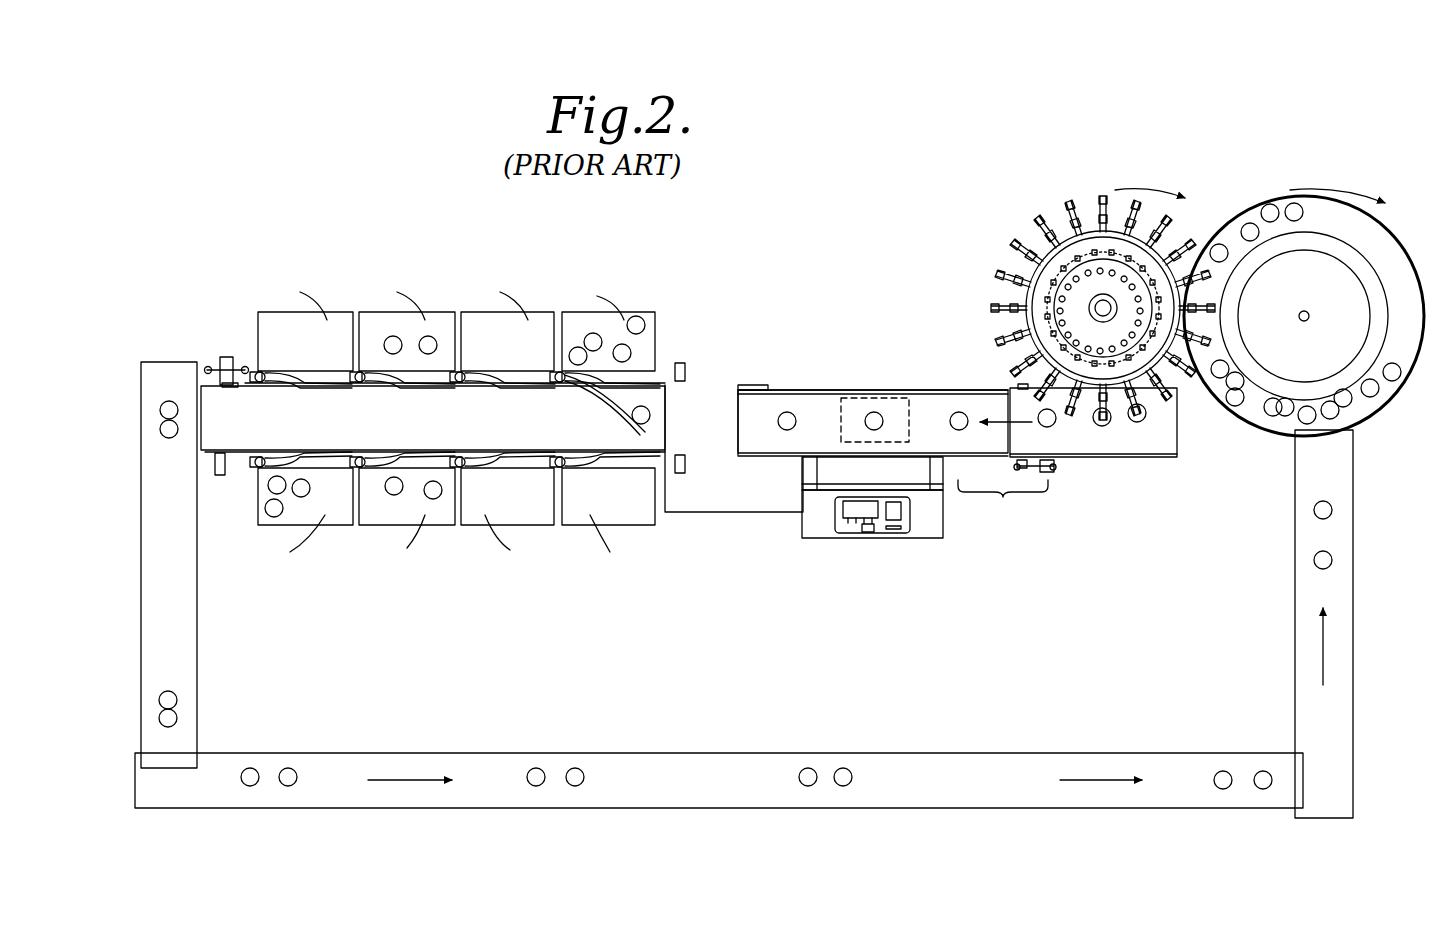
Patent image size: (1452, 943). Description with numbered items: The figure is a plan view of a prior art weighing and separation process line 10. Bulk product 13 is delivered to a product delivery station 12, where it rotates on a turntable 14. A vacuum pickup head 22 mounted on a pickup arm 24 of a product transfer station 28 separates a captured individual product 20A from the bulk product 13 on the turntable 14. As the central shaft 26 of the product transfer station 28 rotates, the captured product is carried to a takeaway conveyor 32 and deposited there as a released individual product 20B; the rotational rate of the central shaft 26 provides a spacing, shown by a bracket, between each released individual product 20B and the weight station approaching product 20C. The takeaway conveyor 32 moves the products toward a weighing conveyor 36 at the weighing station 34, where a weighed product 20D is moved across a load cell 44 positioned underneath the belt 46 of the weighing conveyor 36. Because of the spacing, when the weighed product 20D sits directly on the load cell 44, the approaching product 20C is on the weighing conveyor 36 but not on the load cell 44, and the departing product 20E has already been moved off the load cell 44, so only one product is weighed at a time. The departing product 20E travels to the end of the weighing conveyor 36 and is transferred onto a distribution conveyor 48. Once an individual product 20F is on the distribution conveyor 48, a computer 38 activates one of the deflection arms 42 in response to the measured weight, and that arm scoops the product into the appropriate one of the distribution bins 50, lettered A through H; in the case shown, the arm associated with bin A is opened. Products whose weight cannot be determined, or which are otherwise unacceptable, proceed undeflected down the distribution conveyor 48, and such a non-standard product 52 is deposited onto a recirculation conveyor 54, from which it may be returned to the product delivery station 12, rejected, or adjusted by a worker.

The weighing and separation process line 10 is at (800, 202).
The product delivery station 12 is at (1386, 205).
The bulk product 13 is at (1250, 223).
The turntable 14 is at (1398, 345).
The captured individual product 20A is at (1143, 412).
The released individual product 20B is at (1052, 425).
The weight station approaching product 20C is at (958, 412).
The weighed product 20D is at (878, 414).
The departing product 20E is at (788, 410).
The individual product on distribution conveyor 20F is at (648, 413).
The vacuum pickup head 22 is at (1097, 197).
The pickup arm 24 is at (1037, 232).
The central shaft 26 is at (1100, 316).
The product transfer station 28 is at (968, 265).
The takeaway conveyor 32 is at (1140, 450).
The weighing station 34 is at (858, 328).
The weighing conveyor 36 is at (772, 375).
The computer 38 is at (918, 530).
The deflection arms 42 is at (473, 462).
The load cell 44 is at (850, 408).
The belt 46 is at (776, 443).
The distribution conveyor 48 is at (230, 352).
The distribution bins 50 is at (430, 300).
The non-standard product 52 is at (170, 400).
The recirculation conveyor 54 is at (180, 652).